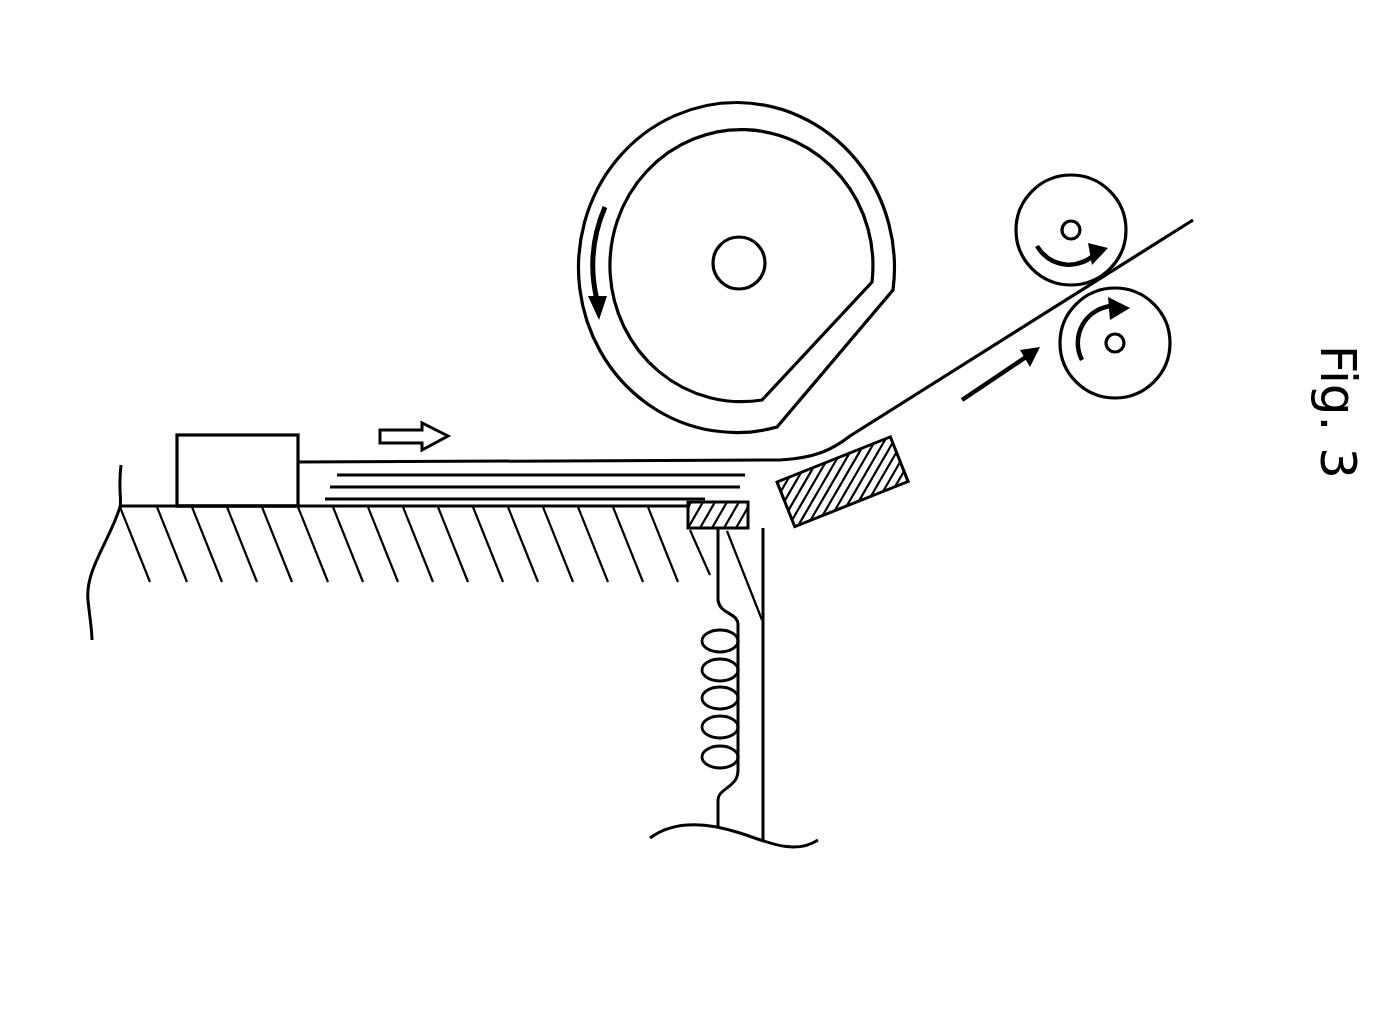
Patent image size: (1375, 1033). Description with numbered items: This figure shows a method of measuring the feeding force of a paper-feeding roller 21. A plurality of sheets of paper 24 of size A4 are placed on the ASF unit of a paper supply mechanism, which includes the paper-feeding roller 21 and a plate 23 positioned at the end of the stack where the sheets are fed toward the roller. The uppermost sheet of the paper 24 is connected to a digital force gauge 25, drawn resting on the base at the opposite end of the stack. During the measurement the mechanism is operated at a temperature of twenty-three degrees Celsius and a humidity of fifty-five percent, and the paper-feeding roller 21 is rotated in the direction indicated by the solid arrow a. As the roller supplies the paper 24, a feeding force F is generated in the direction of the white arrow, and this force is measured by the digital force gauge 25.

The paper-feeding roller 21 is at (600, 173).
The plate 23 is at (843, 510).
The paper 24 is at (375, 465).
The digital force gauge 25 is at (232, 482).